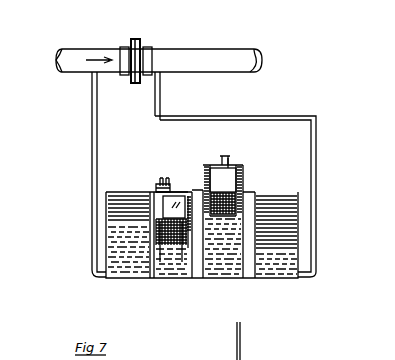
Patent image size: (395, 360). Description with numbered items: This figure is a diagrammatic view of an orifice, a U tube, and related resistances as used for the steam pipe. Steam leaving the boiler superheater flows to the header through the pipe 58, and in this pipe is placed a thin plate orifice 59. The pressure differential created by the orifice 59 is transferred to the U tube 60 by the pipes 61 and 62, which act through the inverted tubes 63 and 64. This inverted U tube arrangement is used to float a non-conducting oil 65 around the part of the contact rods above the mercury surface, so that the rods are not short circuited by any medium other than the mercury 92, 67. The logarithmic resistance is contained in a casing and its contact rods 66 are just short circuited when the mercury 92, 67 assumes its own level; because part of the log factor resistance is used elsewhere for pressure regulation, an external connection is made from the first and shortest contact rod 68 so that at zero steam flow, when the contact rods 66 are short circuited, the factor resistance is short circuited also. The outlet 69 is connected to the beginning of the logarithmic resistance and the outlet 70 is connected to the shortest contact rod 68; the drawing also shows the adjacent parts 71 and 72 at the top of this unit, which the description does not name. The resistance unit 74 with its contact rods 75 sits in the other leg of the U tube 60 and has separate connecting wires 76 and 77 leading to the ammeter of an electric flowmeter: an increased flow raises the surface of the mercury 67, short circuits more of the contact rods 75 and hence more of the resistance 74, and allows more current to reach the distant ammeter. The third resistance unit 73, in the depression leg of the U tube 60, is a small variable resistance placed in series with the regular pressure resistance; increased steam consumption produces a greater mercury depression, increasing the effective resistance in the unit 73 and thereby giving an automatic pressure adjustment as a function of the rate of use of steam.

The pipe 58 is at (196, 49).
The thin plate orifice 59 is at (136, 39).
The U tube 60 is at (199, 278).
The pipe 61 is at (92, 159).
The pipe 62 is at (266, 117).
The inverted tube 63 is at (130, 278).
The inverted tube 64 is at (278, 278).
The non-conducting oil 65 is at (118, 206).
The contact rods 66 is at (168, 278).
The mercury 67 is at (240, 280).
The first contact rod 68 is at (196, 278).
The outlet 69 is at (162, 184).
The outlet 70 is at (170, 186).
The insulator 71 is at (180, 196).
The terminal 72 is at (160, 184).
The resistance unit 73 is at (154, 278).
The resistance unit 74 is at (234, 178).
The contact rods 75 is at (240, 196).
The connecting wire 76 is at (228, 156).
The connecting wire 77 is at (232, 170).
The mercury 92 is at (162, 278).